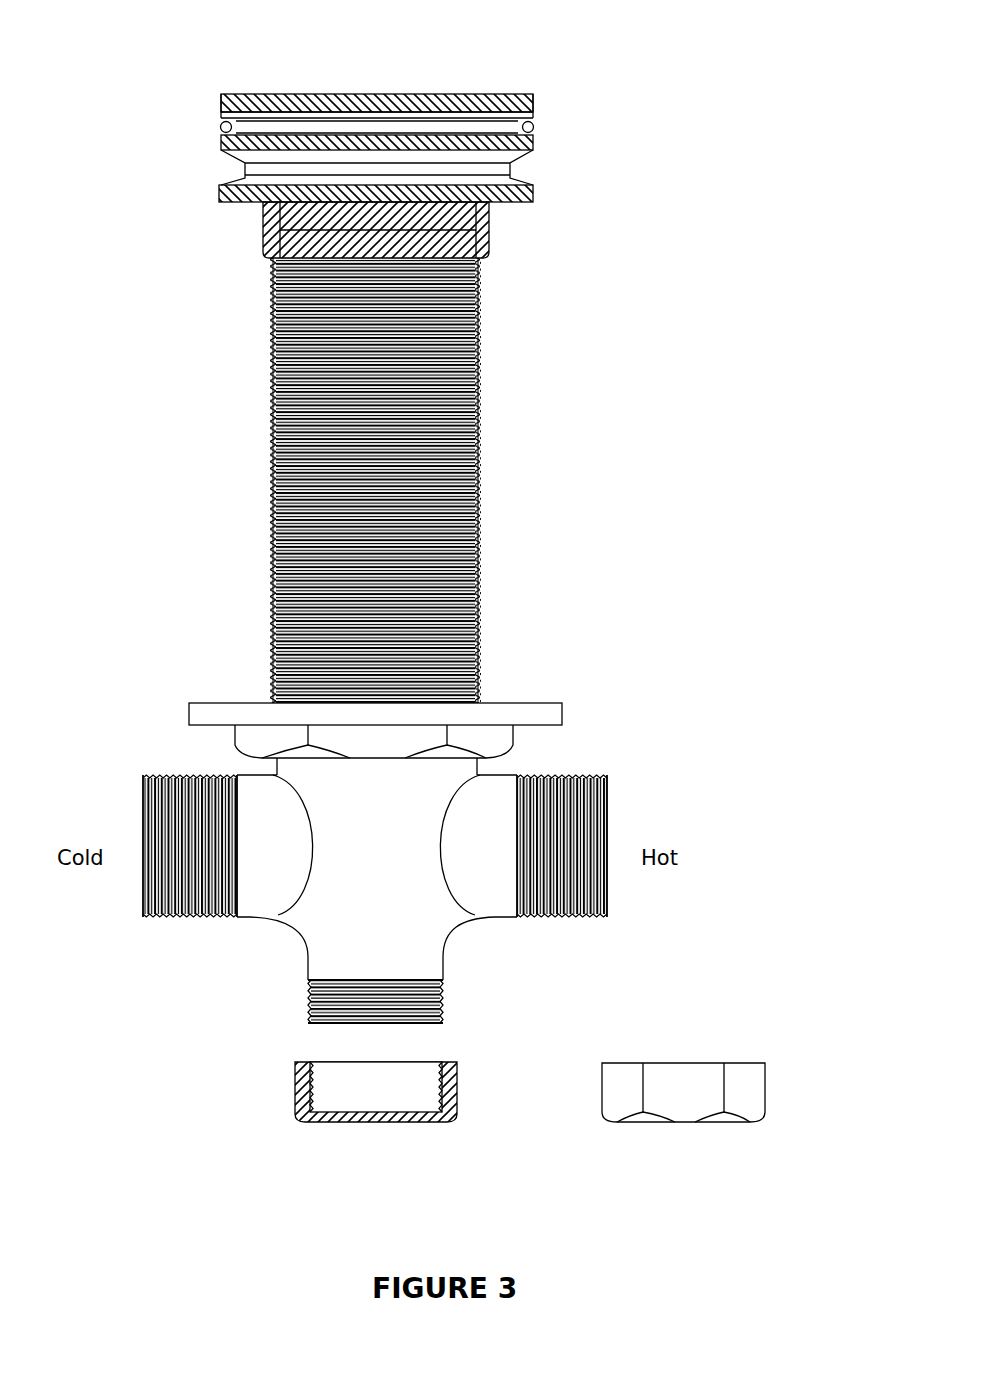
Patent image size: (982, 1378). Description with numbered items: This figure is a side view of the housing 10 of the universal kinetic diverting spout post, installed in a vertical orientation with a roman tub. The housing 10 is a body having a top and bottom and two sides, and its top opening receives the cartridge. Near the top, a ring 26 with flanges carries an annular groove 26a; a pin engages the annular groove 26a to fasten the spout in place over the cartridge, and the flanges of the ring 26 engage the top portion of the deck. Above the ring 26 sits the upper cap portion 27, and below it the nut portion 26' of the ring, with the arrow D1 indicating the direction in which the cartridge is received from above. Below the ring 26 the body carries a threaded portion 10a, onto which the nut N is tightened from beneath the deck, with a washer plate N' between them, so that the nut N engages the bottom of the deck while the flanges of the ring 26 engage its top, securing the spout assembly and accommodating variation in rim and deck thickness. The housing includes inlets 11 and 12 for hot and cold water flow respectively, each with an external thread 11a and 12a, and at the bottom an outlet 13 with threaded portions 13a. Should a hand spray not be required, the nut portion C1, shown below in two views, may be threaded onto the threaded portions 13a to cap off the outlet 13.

The direction of insertion D1 is at (380, 60).
The bearing cap with ball bearings 27 is at (540, 122).
The annular groove 26a is at (540, 160).
The ring 26 is at (484, 196).
The mounting ring nut 26' is at (435, 230).
The housing 10 is at (506, 480).
The threaded portion 10a is at (480, 392).
The washer plate N' is at (375, 693).
The nut N is at (467, 709).
The inlet 12 is at (151, 850).
The thread of cold water inlet 12a is at (197, 917).
The inlet 11 is at (643, 822).
The thread of hot water inlet 11a is at (553, 775).
The outlet 13 is at (419, 1019).
The threaded portions 13a is at (443, 1003).
The nut portion C1 is at (457, 1083).